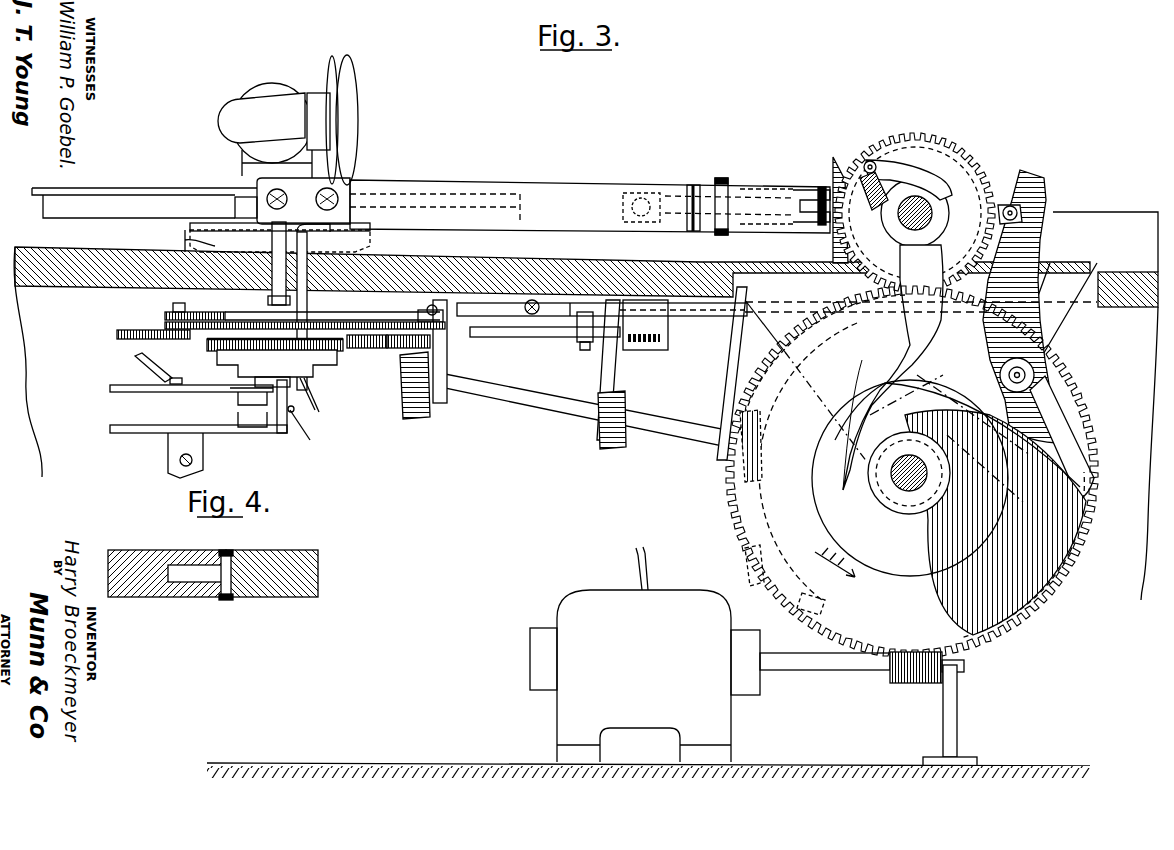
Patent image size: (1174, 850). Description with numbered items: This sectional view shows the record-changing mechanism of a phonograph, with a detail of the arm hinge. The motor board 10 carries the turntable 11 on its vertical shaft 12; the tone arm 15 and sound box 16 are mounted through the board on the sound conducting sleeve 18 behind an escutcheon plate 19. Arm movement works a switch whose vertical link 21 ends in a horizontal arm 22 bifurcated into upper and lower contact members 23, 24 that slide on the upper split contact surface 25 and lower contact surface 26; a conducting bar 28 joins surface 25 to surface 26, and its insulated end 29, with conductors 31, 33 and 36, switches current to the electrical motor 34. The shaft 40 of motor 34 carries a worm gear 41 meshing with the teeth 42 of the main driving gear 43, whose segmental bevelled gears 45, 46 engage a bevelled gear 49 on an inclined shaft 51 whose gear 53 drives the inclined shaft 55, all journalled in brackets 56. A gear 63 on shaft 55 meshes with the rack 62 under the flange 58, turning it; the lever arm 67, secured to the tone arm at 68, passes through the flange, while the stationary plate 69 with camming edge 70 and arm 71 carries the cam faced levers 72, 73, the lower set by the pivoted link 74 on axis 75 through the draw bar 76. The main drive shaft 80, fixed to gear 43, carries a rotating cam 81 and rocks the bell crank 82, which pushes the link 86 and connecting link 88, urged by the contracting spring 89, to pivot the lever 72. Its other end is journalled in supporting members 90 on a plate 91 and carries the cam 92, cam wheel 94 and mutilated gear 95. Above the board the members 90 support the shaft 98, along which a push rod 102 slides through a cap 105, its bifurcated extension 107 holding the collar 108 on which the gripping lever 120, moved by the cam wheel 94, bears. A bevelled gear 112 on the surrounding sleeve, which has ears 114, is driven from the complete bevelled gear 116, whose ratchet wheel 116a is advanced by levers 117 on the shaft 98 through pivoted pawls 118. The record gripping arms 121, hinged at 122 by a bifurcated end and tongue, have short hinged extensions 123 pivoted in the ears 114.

In FIG. 3, the motor board 10 is at (1078, 313).
In FIG. 3, the turntable 11 is at (60, 222).
In FIG. 3, the central vertical shaft 12 is at (270, 242).
In FIG. 3, the tone arm 15 is at (215, 128).
In FIG. 3, the sound box 16 is at (362, 140).
In FIG. 3, the tubular sound conducting sleeve 18 is at (320, 368).
In FIG. 3, the escutcheon plate 19 is at (185, 245).
In FIG. 3, the vertical operating link 21 is at (240, 388).
In FIG. 3, the horizontal arm 22 is at (283, 433).
In FIG. 3, the upper contact member 23 is at (238, 400).
In FIG. 3, the lower contact member 24 is at (238, 422).
In FIG. 3, the upper split contact surface 25 is at (262, 386).
In FIG. 3, the lower contact surface 26 is at (148, 433).
In FIG. 3, the conducting bar 28 is at (318, 395).
In FIG. 3, the end of upper contact surface 29 is at (150, 392).
In FIG. 3, the conductor 31 is at (317, 412).
In FIG. 3, the conductor 33 is at (310, 436).
In FIG. 3, the electrical motor 34 is at (598, 590).
In FIG. 3, the conductor 36 is at (138, 365).
In FIG. 3, the shaft 40 is at (835, 670).
In FIG. 3, the worm gear 41 is at (907, 683).
In FIG. 3, the peripheral edge teeth 42 is at (1085, 440).
In FIG. 3, the main driving gear 43 is at (1033, 620).
In FIG. 3, the segmental bevelled gear 45 is at (822, 378).
In FIG. 3, the segmental bevelled gear 46 is at (745, 548).
In FIG. 3, the cooperating bevelled gear 49 is at (738, 470).
In FIG. 3, the inclined shaft 51 is at (685, 428).
In FIG. 3, the gear 53 is at (608, 449).
In FIG. 3, the shaft 55 is at (545, 410).
In FIG. 3, the brackets 56 is at (738, 353).
In FIG. 3, the flange 58 is at (117, 335).
In FIG. 3, the rack 62 is at (395, 348).
In FIG. 3, the gear 63 is at (415, 418).
In FIG. 3, the operating lever arm 67 is at (330, 246).
In FIG. 3, the securing point 68 is at (262, 168).
In FIG. 3, the stationary plate 69 is at (210, 340).
In FIG. 3, the camming edge 70 is at (355, 348).
In FIG. 3, the extending arm 71 is at (165, 316).
In FIG. 3, the upper cam faced lever 72 is at (418, 313).
In FIG. 3, the lower cam faced lever 73 is at (470, 337).
In FIG. 3, the pivoted link 74 is at (533, 340).
In FIG. 3, the axis 75 is at (585, 344).
In FIG. 3, the draw bar 76 is at (662, 344).
In FIG. 3, the main drive shaft 80 is at (909, 473).
In FIG. 3, the rotating cam 81 is at (935, 393).
In FIG. 3, the bell crank 82 is at (905, 378).
In FIG. 3, the link 86 is at (570, 303).
In FIG. 3, the connecting link 88 is at (475, 303).
In FIG. 3, the contracting spring 89 is at (534, 300).
In FIG. 3, the supporting members 90 is at (812, 420).
In FIG. 3, the plate 91 is at (1070, 264).
In FIG. 3, the cam 92 is at (935, 600).
In FIG. 3, the cam wheel 94 is at (805, 462).
In FIG. 3, the mutilated gear 95 is at (1080, 570).
In FIG. 3, the shaft 98 is at (925, 200).
In FIG. 3, the push rod 102 is at (655, 195).
In FIG. 3, the cap 105 is at (722, 180).
In FIG. 3, the bifurcated extension 107 is at (1008, 206).
In FIG. 3, the collar 108 is at (1028, 175).
In FIG. 3, the bevelled gear 112 is at (835, 165).
In FIG. 3, the ears 114 is at (795, 190).
In FIG. 3, the complete bevelled gear 116 is at (905, 133).
In FIG. 3, the ratchet wheel 116a is at (917, 180).
In FIG. 3, the levers 117 is at (893, 343).
In FIG. 3, the pivoted pawls 118 is at (868, 162).
In FIG. 3, the gripping lever 120 is at (1040, 400).
In FIG. 3, the hinged arms 121 is at (473, 186).
In FIG. 4, the hinged arms 121 is at (175, 597).
In FIG. 3, the hinge 122 is at (690, 228).
In FIG. 4, the hinge 122 is at (219, 552).
In FIG. 4, the short hinged extension 123 is at (265, 597).